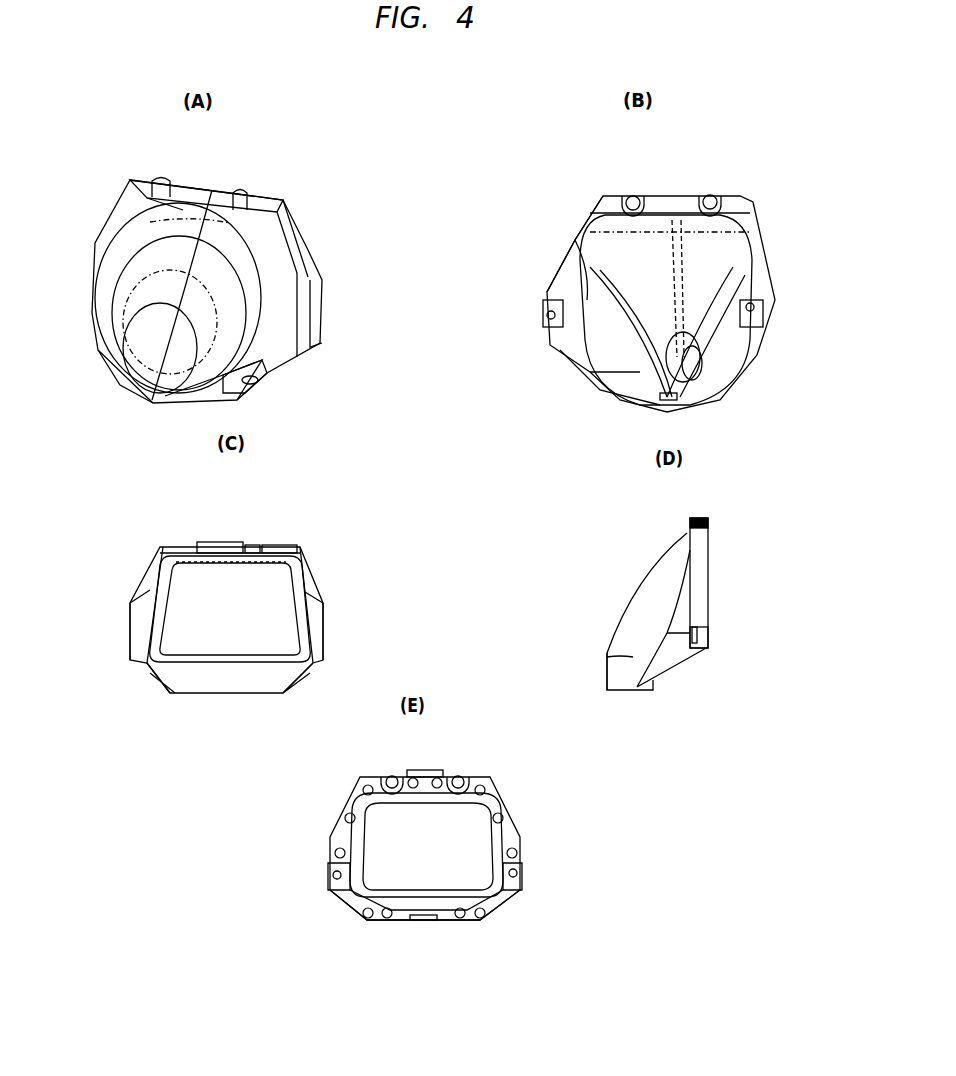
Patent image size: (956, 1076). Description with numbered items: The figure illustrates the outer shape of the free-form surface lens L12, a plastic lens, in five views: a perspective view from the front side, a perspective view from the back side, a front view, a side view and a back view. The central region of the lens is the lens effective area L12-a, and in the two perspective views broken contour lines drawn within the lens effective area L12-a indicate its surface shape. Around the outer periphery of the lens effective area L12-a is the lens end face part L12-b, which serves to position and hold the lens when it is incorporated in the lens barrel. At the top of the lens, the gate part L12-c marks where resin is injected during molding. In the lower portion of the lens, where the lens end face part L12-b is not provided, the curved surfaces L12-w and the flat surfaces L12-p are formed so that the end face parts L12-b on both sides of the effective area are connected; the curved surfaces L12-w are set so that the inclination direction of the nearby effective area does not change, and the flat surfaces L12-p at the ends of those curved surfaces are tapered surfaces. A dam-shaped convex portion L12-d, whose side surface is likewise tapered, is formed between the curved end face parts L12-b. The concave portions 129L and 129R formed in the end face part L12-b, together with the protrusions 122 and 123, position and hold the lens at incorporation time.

The free-form surface lens L12 is at (441, 557).
The lens effective area L12-a is at (135, 265).
The lens end face part L12-b is at (298, 240).
The gate part L12-c is at (207, 178).
The dam-shaped convex portion L12-d is at (668, 398).
The flat surface L12-p is at (215, 192).
The curved surface L12-w is at (183, 210).
The protrusion 122 is at (548, 313).
The protrusion 123 is at (757, 330).
The concave portion 129L is at (166, 182).
The concave portion 129R is at (250, 195).